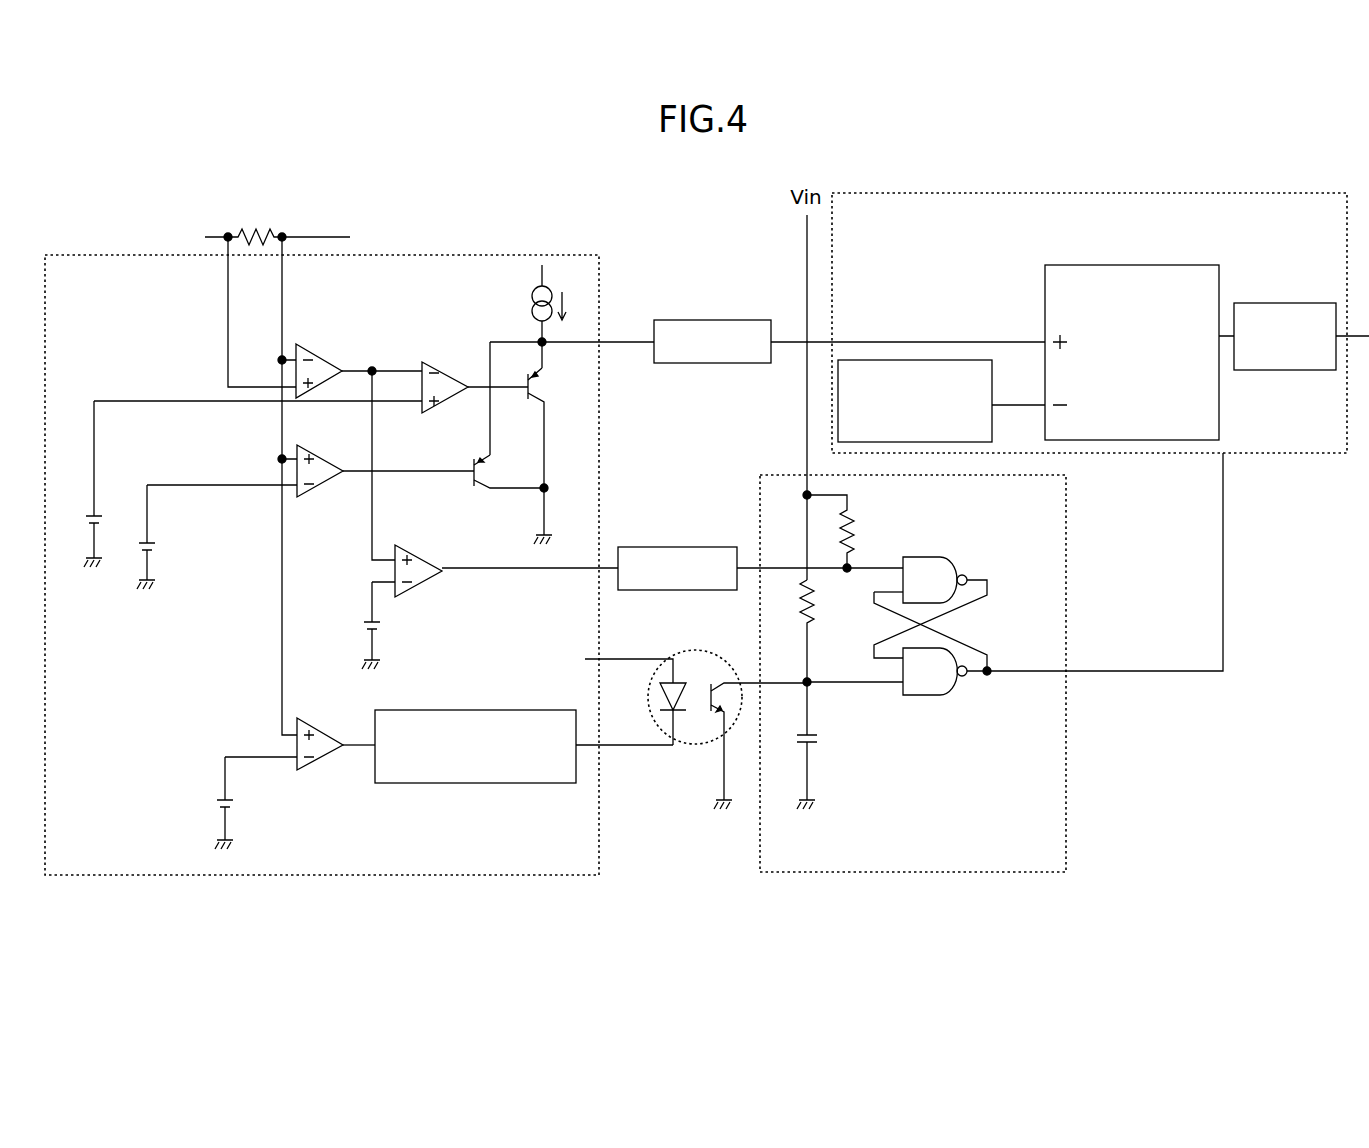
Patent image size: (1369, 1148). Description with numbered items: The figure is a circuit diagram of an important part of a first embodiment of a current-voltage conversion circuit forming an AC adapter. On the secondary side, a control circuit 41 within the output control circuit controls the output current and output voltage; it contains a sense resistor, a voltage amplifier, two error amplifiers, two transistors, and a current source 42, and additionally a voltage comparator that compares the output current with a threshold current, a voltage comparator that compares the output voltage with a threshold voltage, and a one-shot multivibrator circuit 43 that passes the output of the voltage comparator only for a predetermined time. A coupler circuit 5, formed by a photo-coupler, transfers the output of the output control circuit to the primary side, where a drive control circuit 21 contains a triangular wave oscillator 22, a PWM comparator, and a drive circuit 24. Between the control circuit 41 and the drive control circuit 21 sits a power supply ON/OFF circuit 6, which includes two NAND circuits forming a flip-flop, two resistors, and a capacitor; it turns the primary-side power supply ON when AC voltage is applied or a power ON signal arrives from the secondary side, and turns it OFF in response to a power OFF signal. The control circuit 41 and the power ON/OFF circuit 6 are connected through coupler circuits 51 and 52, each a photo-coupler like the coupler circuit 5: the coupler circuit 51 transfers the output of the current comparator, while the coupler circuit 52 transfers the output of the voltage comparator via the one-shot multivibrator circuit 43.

The coupler circuit 5 is at (685, 320).
The power supply ON/OFF circuit 6 is at (1067, 514).
The drive control circuit 21 is at (1312, 191).
The triangular wave oscillator 22 is at (992, 389).
The drive circuit 24 is at (1285, 303).
The control circuit 41 is at (585, 254).
The current source 42 is at (531, 301).
The 1-shot multivibrator circuit 43 is at (463, 710).
The coupler circuit 51 is at (685, 547).
The coupler circuit 52 is at (691, 745).